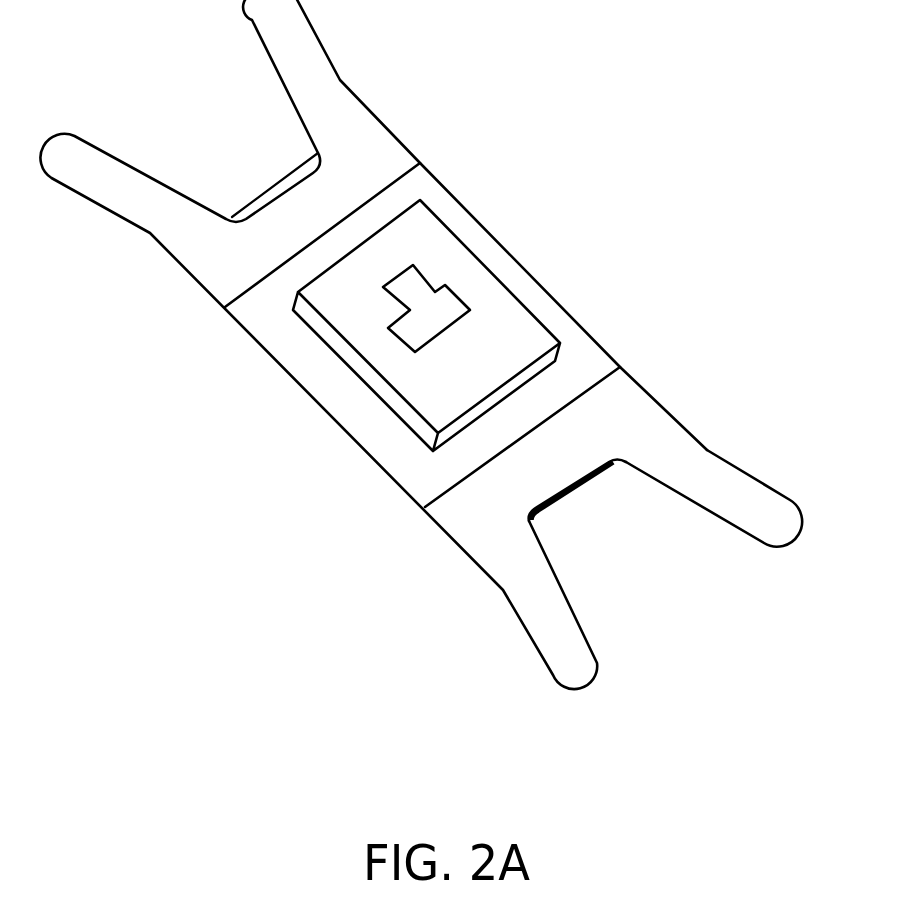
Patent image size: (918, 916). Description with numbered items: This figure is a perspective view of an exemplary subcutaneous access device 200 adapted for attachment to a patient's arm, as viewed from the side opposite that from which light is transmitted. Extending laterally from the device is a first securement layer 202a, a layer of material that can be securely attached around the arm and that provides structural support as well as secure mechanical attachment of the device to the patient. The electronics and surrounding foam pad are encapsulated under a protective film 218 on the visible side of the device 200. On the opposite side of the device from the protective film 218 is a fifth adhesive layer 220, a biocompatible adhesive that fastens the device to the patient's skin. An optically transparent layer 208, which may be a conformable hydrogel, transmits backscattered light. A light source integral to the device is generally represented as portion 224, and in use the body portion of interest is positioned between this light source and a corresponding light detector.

The subcutaneous access device 200 is at (684, 134).
The first securement layer 202a is at (770, 500).
The optically transparent layer 208 is at (408, 333).
The protective film 218 is at (573, 360).
The fifth adhesive layer 220 is at (568, 487).
The light source portion 224 is at (441, 385).